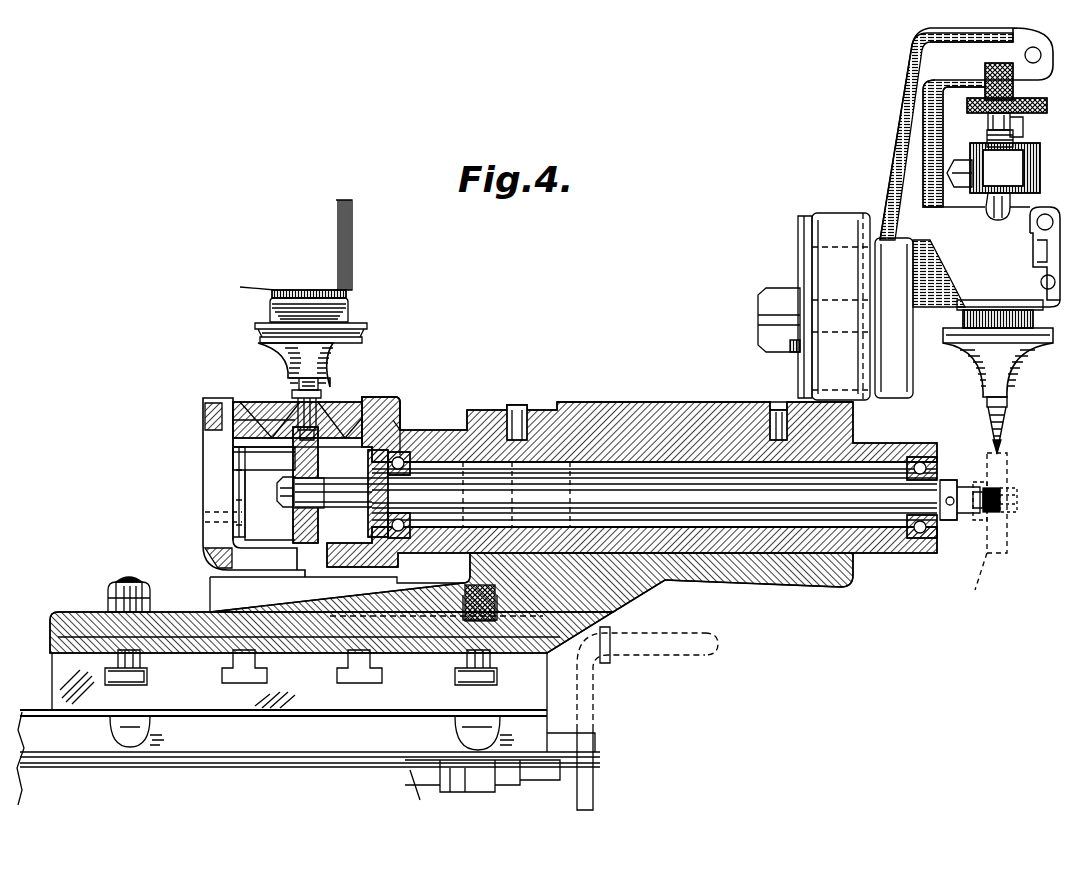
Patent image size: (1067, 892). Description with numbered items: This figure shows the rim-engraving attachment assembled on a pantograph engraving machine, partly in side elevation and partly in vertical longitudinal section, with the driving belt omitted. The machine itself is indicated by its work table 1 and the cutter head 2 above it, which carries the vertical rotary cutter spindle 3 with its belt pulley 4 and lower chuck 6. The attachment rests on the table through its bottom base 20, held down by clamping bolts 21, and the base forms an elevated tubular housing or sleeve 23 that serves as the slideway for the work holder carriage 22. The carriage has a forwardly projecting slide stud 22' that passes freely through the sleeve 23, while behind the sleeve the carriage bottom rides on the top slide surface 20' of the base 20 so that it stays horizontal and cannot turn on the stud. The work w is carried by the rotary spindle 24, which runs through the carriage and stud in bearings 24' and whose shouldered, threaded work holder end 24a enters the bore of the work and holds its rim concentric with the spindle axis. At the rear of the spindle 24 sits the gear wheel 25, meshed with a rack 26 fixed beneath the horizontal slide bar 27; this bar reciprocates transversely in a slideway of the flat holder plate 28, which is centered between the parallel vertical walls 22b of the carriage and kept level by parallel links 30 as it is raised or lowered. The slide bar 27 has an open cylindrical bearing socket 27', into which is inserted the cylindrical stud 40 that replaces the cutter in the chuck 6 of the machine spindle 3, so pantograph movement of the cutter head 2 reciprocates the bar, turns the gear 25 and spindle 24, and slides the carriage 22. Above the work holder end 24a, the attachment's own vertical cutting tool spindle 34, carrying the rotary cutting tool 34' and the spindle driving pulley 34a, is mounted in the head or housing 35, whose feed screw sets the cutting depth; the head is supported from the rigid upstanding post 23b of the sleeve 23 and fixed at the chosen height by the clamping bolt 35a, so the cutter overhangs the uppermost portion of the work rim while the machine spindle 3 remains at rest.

The work table 1 is at (533, 698).
The cutter head 2 is at (352, 247).
The rotary cutter spindle 3 is at (327, 380).
The belt pulley 4 is at (357, 330).
The chuck 6 is at (320, 393).
The base 20 is at (508, 587).
The top slide surface 20' is at (232, 557).
The clamping bolts 21 is at (145, 658).
The work holder carriage 22 is at (201, 471).
The slide stud 22' is at (705, 408).
The vertical walls 22b is at (233, 460).
The tubular housing or sleeve 23 is at (623, 408).
The upstanding post 23b is at (815, 258).
The work holder spindle 24 is at (637, 539).
The bearings 24' is at (652, 501).
The work holder end 24a is at (992, 488).
The gear wheel 25 is at (290, 512).
The rack 26 is at (317, 447).
The slide bar 27 is at (283, 409).
The bearing socket 27' is at (264, 492).
The holder plate 28 is at (368, 405).
The parallel links 30 is at (237, 492).
The cutting tool spindle 34 is at (995, 398).
The rotary cutting tool 34' is at (972, 438).
The spindle driving pulley 34a is at (948, 343).
The head or housing 35 is at (890, 237).
The clamping bolt 35a is at (762, 307).
The cylindrical stud 40 is at (305, 410).
The work w is at (985, 529).